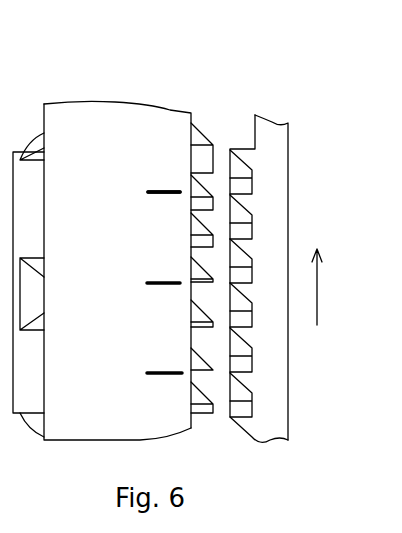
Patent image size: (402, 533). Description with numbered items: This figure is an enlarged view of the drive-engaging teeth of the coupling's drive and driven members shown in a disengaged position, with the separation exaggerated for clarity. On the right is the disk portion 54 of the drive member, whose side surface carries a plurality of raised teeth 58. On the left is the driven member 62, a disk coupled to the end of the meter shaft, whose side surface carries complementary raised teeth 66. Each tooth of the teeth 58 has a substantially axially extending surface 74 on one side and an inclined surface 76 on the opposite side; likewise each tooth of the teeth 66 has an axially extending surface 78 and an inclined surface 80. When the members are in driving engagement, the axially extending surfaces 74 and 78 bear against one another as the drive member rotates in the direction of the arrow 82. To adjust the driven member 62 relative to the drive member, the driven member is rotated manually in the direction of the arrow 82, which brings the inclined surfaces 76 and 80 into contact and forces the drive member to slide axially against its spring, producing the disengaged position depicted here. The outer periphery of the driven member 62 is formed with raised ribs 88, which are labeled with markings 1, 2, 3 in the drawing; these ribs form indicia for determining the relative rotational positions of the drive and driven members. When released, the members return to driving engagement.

The disk portion 54 is at (275, 353).
The raised teeth 58 is at (242, 380).
The driven member 62 is at (90, 108).
The raised teeth 66 is at (201, 178).
The axially extending surfaces 74 is at (238, 188).
The inclined surfaces 76 is at (245, 231).
The axially extending surfaces 78 is at (212, 382).
The inclined surfaces 80 is at (203, 340).
The arrow 82 is at (317, 285).
The raised ribs 88 is at (162, 189).
The first position marker 1 is at (153, 191).
The second position marker 2 is at (153, 282).
The third position marker 3 is at (154, 372).